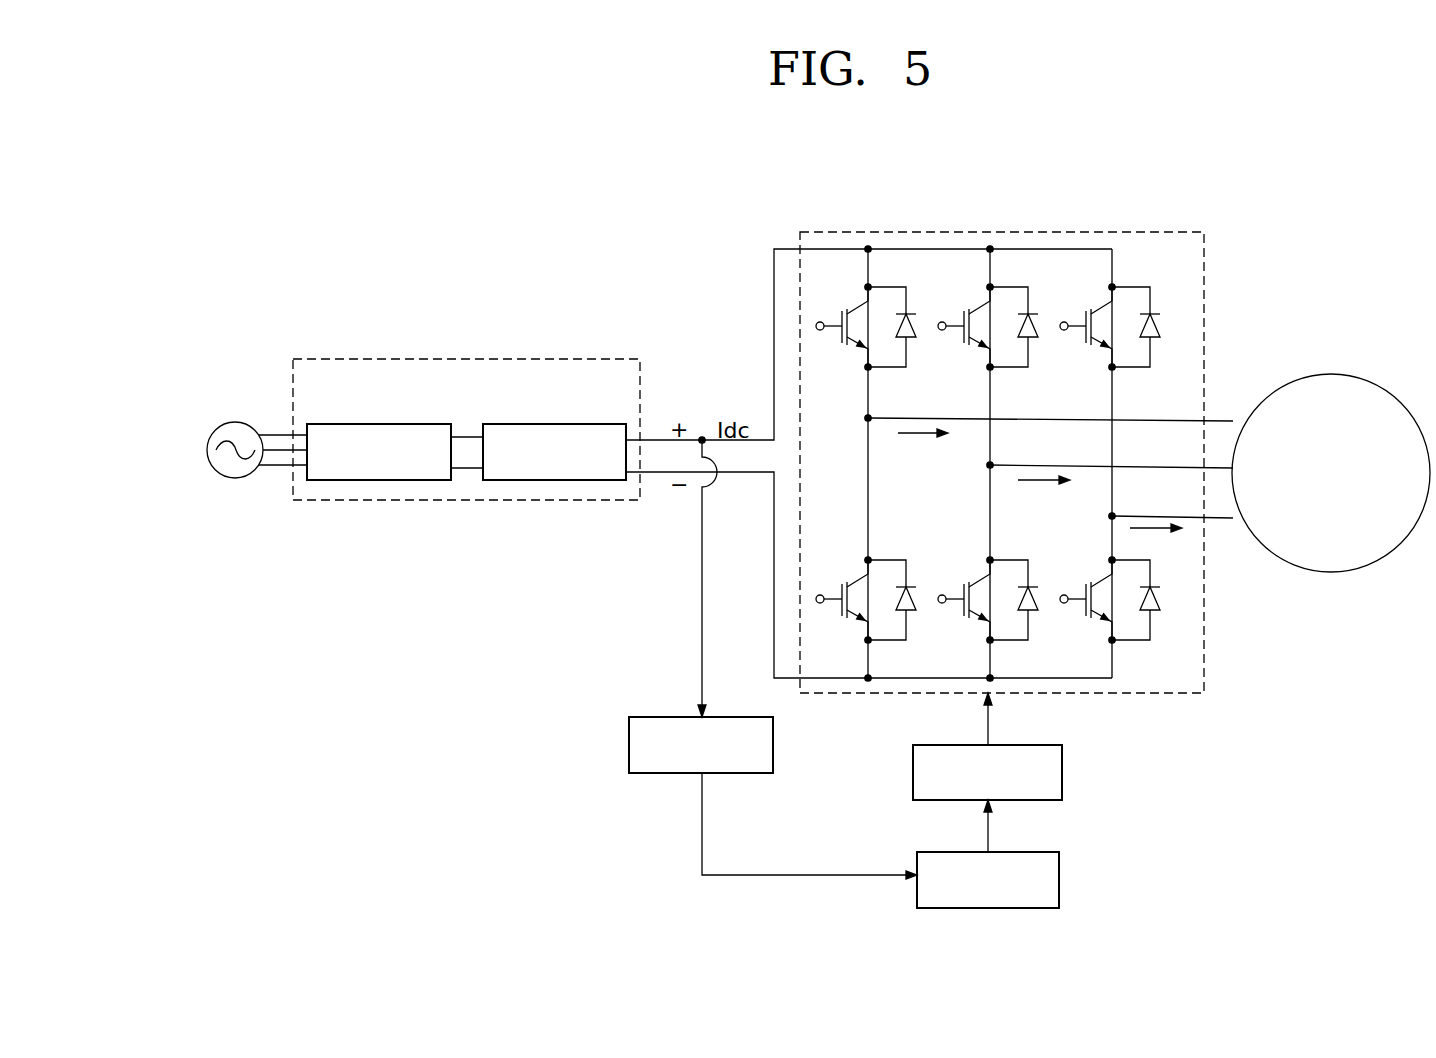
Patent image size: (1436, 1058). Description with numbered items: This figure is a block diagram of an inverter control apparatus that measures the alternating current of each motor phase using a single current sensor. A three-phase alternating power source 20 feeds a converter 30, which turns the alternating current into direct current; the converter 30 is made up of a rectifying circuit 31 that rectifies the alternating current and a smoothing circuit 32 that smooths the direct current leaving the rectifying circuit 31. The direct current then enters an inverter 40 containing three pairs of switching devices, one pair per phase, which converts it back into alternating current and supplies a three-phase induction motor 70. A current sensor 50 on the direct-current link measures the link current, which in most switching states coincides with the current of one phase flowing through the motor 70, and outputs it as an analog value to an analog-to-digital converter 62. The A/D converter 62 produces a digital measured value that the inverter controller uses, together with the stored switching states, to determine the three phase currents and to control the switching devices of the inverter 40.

The three-phase alternating power source 20 is at (235, 423).
The converter 30 is at (466, 359).
The rectifying circuit 31 is at (388, 424).
The smoothing circuit 32 is at (562, 424).
The inverter 40 is at (988, 232).
The current sensor 50 is at (629, 742).
The analog-to-digital (A/D) converter 62 is at (1063, 777).
The three-phase induction motor 70 is at (1331, 374).